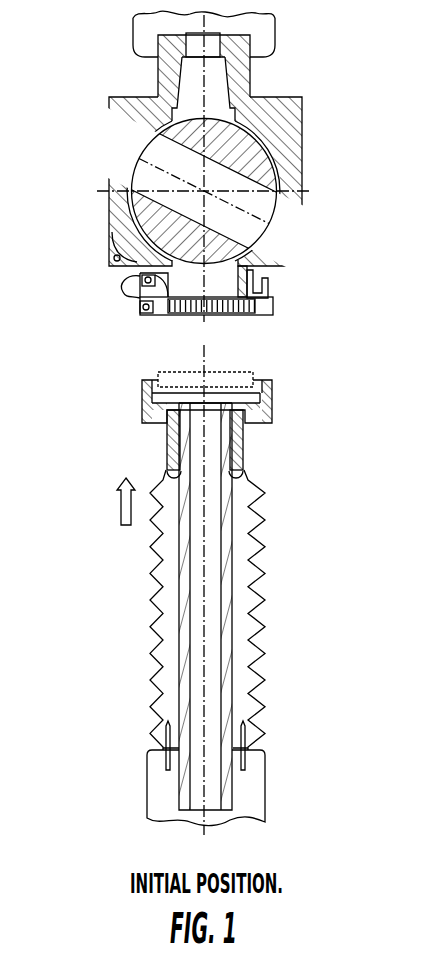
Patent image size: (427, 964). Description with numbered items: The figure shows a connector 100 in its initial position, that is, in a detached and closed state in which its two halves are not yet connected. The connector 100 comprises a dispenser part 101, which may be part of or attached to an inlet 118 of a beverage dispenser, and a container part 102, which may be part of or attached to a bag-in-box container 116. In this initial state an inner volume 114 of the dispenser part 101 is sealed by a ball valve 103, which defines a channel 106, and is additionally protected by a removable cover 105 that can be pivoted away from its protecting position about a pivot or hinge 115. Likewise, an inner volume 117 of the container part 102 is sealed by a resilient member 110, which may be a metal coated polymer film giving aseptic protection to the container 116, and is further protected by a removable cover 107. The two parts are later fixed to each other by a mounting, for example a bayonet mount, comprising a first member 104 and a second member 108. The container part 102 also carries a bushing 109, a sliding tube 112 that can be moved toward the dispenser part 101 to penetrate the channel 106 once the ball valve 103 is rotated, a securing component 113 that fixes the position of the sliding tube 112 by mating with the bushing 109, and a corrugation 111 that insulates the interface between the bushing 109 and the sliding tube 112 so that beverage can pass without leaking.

The connector 100 is at (226, 423).
The dispenser part 101 is at (243, 166).
The container part 102 is at (258, 585).
The ball valve 103 is at (210, 191).
The first member 104 is at (301, 265).
The removable cover 105 is at (273, 294).
The channel 106 is at (180, 170).
The removable cover 107 is at (228, 378).
The second member 108 is at (268, 390).
The bushing 109 is at (243, 437).
The resilient member 110 is at (188, 424).
The corrugation 111 is at (257, 515).
The sliding tube 112 is at (180, 552).
The securing component 113 is at (165, 748).
The inner volume 114 is at (215, 78).
The pivot or hinge 115 is at (112, 290).
The bag-in-box container 116 is at (236, 788).
The inner volume 117 is at (204, 610).
The inlet 118 is at (263, 31).